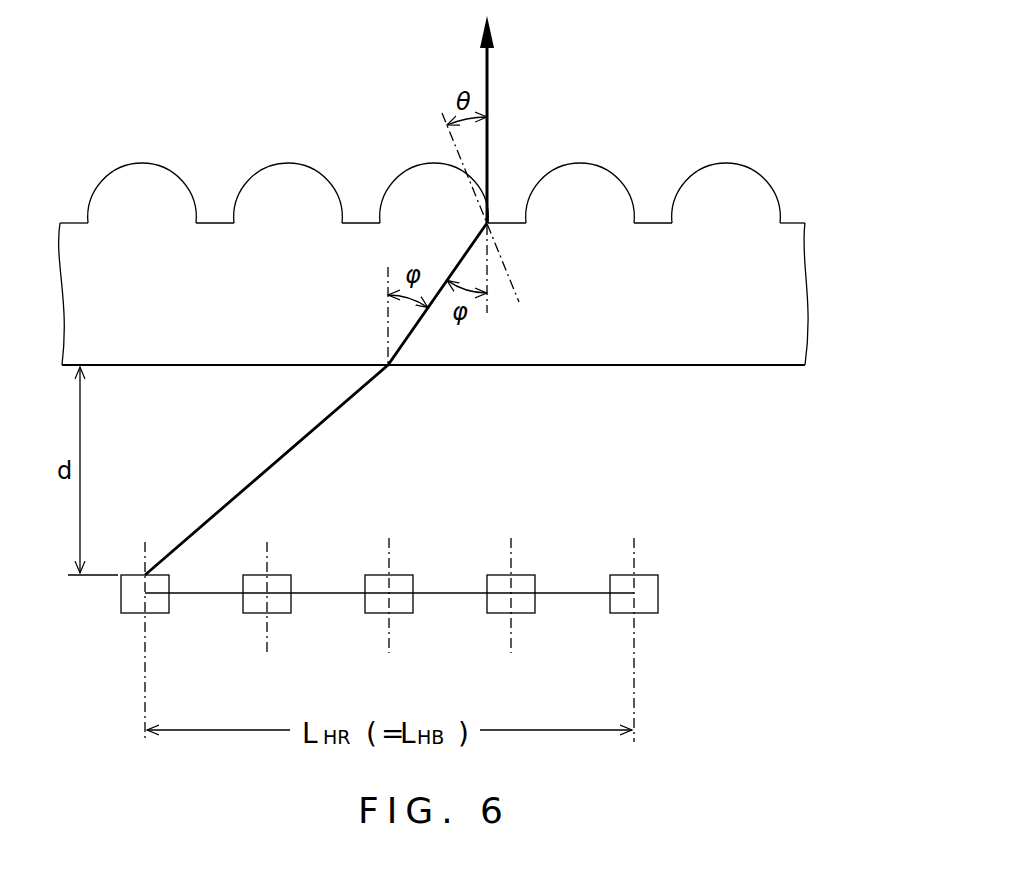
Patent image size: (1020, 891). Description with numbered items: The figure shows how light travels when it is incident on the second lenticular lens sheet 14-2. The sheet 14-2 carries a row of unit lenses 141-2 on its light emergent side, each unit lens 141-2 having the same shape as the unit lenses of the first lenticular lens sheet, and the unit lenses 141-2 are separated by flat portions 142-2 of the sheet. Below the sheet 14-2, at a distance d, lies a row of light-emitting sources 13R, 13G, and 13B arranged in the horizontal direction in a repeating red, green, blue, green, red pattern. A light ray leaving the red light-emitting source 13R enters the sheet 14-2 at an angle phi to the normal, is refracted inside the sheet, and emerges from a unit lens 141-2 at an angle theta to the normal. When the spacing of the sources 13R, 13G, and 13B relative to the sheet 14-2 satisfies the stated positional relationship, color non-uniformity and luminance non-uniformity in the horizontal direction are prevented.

The second lenticular lens sheet 14-2 is at (647, 333).
The unit lens 141-2 is at (575, 180).
The flat portion between lenses 142-2 is at (504, 226).
The light-emitting source 13R is at (130, 613).
The light-emitting source 13G is at (253, 613).
The light-emitting source 13B is at (375, 613).